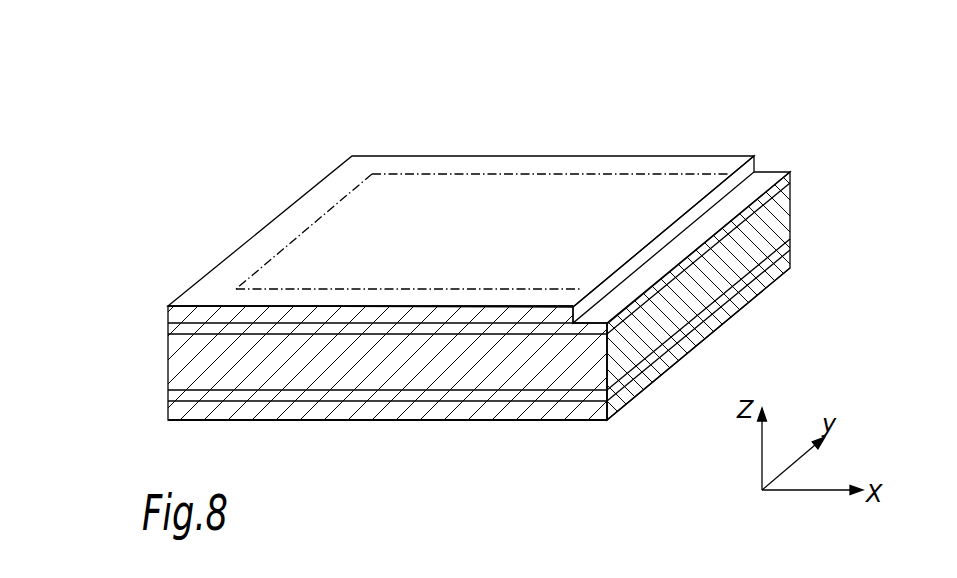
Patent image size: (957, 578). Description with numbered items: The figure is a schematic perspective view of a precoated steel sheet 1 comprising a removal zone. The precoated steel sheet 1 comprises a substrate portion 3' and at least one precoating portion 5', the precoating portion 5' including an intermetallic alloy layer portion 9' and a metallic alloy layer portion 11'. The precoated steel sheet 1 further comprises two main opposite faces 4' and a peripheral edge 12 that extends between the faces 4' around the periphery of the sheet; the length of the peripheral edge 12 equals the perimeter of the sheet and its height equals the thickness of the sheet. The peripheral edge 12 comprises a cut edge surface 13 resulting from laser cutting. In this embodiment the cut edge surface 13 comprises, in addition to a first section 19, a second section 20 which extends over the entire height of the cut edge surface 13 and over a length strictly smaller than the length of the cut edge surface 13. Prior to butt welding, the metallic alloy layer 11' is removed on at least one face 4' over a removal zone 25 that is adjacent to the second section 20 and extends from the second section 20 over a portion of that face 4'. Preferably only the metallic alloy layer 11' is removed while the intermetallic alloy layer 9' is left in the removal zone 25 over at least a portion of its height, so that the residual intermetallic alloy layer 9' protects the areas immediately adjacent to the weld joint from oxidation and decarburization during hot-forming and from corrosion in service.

The precoated steel sheet 1 is at (300, 140).
The main face 4' is at (449, 280).
The precoating portion 5' is at (422, 330).
The metallic alloy layer portion 11' is at (346, 303).
The intermetallic alloy layer portion 9' is at (438, 262).
The cut edge surface 13 is at (118, 350).
The substrate portion 3' is at (381, 363).
The peripheral edge 12 is at (270, 389).
The first section 19 is at (415, 408).
The removal zone 25 is at (586, 336).
The second section 20 is at (786, 272).